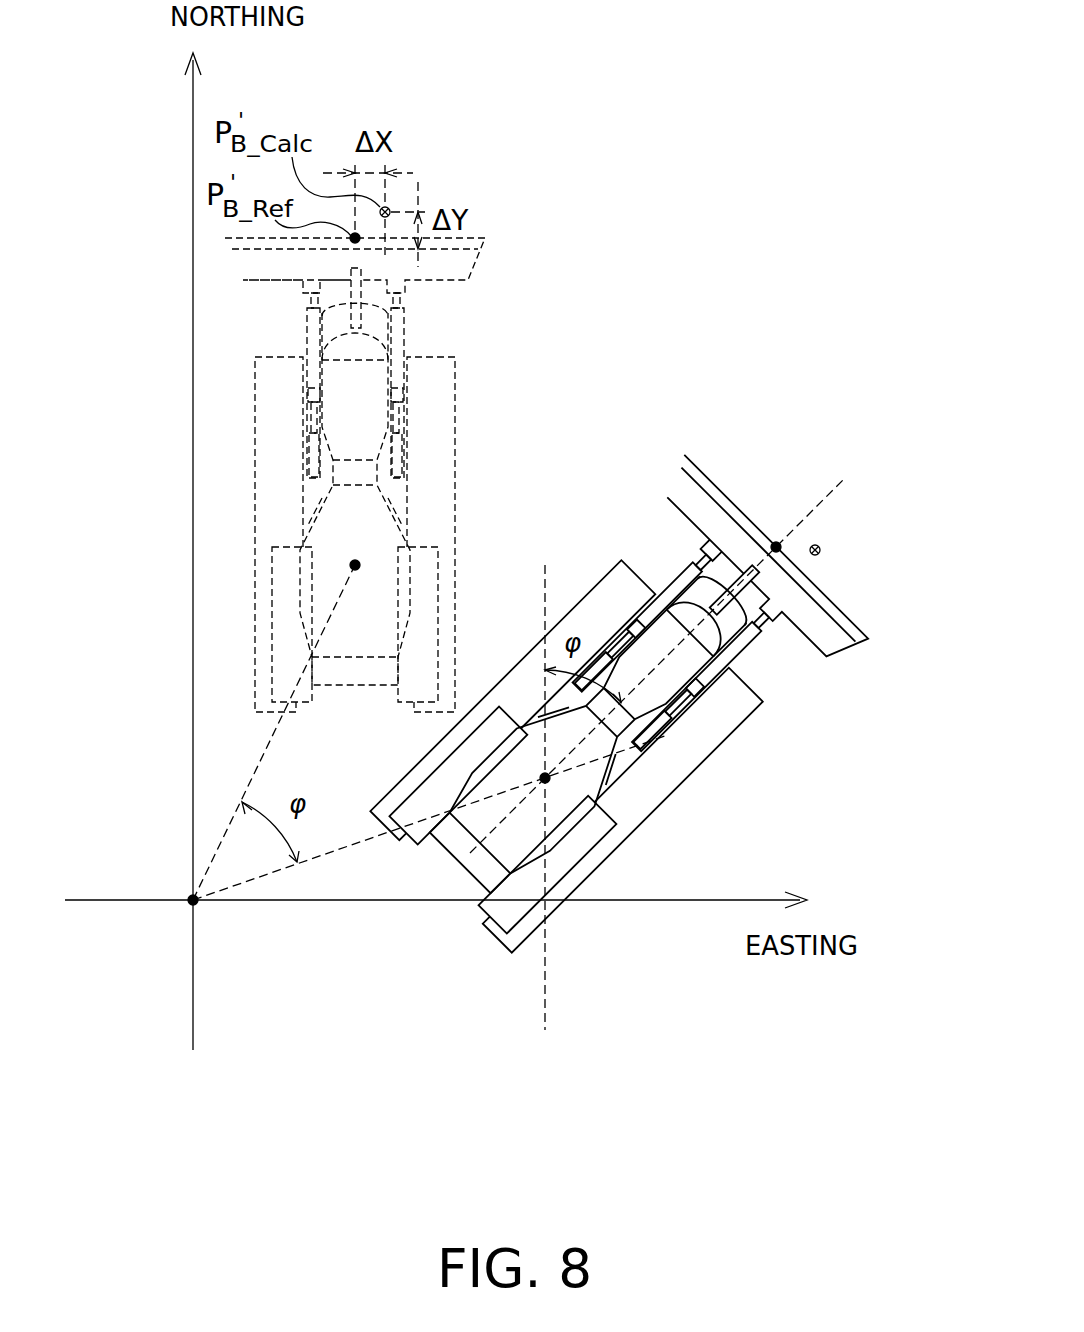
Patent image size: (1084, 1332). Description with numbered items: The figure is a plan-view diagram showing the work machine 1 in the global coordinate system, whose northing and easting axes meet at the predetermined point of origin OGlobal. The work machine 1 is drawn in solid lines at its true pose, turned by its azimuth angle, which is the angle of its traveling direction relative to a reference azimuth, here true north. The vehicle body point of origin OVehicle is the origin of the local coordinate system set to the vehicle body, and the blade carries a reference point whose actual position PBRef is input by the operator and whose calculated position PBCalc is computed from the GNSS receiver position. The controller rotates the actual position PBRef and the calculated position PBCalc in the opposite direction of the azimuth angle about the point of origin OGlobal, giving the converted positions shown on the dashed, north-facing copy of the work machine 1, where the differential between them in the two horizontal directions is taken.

The work machine 1 is at (597, 524).
The point of origin of the global coordinate system OGlobal is at (190, 903).
The vehicle body point of origin OVehicle is at (549, 776).
The actual position of the reference point PBRef is at (776, 544).
The calculated position of the reference point PBCalc is at (821, 549).